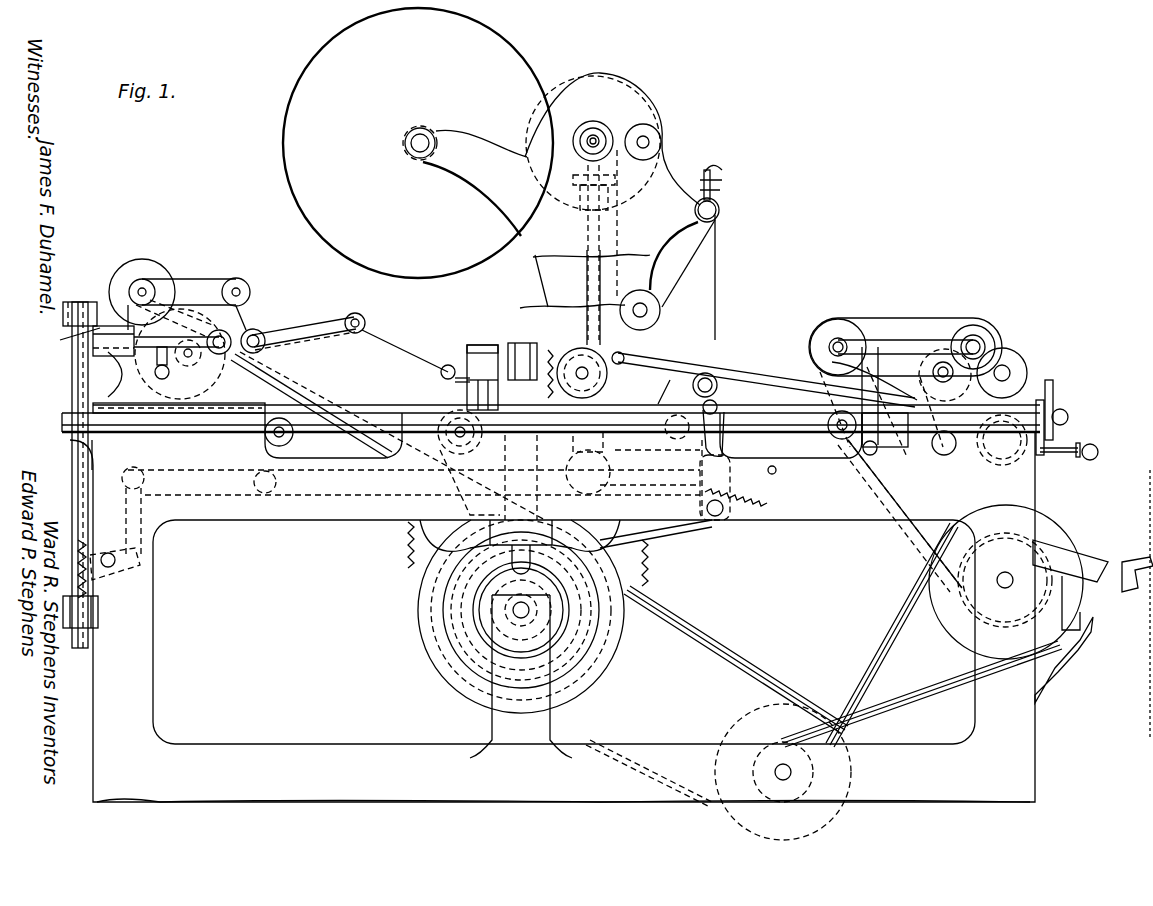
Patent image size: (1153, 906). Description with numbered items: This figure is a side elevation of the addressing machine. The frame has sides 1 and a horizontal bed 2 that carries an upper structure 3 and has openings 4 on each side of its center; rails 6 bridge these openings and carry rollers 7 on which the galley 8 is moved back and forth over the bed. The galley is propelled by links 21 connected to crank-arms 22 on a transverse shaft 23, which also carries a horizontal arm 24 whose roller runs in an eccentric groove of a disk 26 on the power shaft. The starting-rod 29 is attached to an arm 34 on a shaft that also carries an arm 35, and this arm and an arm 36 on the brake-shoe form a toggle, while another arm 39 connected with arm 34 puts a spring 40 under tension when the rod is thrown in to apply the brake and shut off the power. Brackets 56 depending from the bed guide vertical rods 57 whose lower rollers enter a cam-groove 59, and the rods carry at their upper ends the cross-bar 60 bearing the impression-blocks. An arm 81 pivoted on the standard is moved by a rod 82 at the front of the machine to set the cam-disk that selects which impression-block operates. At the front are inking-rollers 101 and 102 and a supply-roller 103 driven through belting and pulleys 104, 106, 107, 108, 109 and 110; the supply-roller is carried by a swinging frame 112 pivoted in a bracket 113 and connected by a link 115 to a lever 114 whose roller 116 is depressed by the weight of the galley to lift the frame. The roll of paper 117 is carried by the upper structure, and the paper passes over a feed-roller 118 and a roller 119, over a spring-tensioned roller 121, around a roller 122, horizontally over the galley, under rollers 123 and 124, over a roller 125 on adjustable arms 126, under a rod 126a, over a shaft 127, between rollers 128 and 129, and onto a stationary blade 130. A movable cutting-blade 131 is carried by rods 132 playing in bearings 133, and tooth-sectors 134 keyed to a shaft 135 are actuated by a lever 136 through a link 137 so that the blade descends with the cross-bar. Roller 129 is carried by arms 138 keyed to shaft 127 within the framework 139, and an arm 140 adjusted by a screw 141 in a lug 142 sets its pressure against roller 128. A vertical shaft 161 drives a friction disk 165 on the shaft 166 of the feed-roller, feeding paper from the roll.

The sides 1 is at (206, 515).
The horizontal bed 2 is at (413, 420).
The upper structure 3 is at (668, 168).
The openings 4 is at (563, 437).
The rails 6 is at (326, 432).
The rollers 7 is at (266, 440).
The galley 8 is at (373, 412).
The links 21 is at (672, 400).
The crank-arms 22 is at (722, 412).
The transverse shaft 23 is at (714, 518).
The horizontal arm 24 is at (650, 560).
The disk 26 is at (600, 660).
The starting-rod 29 is at (1060, 456).
The arm 34 is at (636, 468).
The arm 35 is at (632, 524).
The arm 36 is at (505, 536).
The arm 39 is at (703, 480).
The spring 40 is at (740, 486).
The brackets 56 is at (478, 458).
The rods 57 is at (560, 460).
The cam-groove 59 is at (470, 602).
The cross-bar 60 is at (553, 370).
The arm 81 is at (618, 352).
The rod 82 is at (744, 378).
The inking-roller 101 is at (1022, 362).
The inking-roller 102 is at (945, 375).
The supply-roller 103 is at (985, 340).
The pulley 104 is at (985, 316).
The pulley 106 is at (820, 332).
The pulley 107 is at (970, 554).
The pulley 108 is at (957, 636).
The pulley 109 is at (775, 755).
The pulley 110 is at (824, 640).
The swinging frame 112 is at (888, 338).
The bracket 113 is at (838, 365).
The lever 114 is at (896, 452).
The link 115 is at (887, 430).
The roller 116 is at (1006, 458).
The roll of paper 117 is at (312, 222).
The feed-roller 118 is at (580, 122).
The roller 119 is at (664, 136).
The roller 121 is at (718, 205).
The roller 122 is at (702, 374).
The roller 123 is at (488, 350).
The roller 124 is at (446, 366).
The roller 125 is at (364, 320).
The adjustable arms 126 is at (318, 322).
The rod 126a is at (270, 345).
The shaft 127 is at (254, 330).
The roller 128 is at (142, 270).
The roller 129 is at (118, 356).
The horizontal stationary blade 130 is at (92, 305).
The movable cutting-blade 131 is at (72, 328).
The rods 132 is at (72, 478).
The bearings 133 is at (78, 612).
The tooth-sectors 134 is at (78, 552).
The shaft 135 is at (108, 554).
The lever 136 is at (338, 485).
The link 137 is at (125, 490).
The arms 138 is at (218, 356).
The framework 139 is at (232, 368).
The arm 140 is at (226, 300).
The screw 141 is at (160, 372).
The lug 142 is at (157, 352).
The vertical shaft 161 is at (587, 322).
The disk 165 is at (635, 90).
The shaft 166 is at (596, 136).